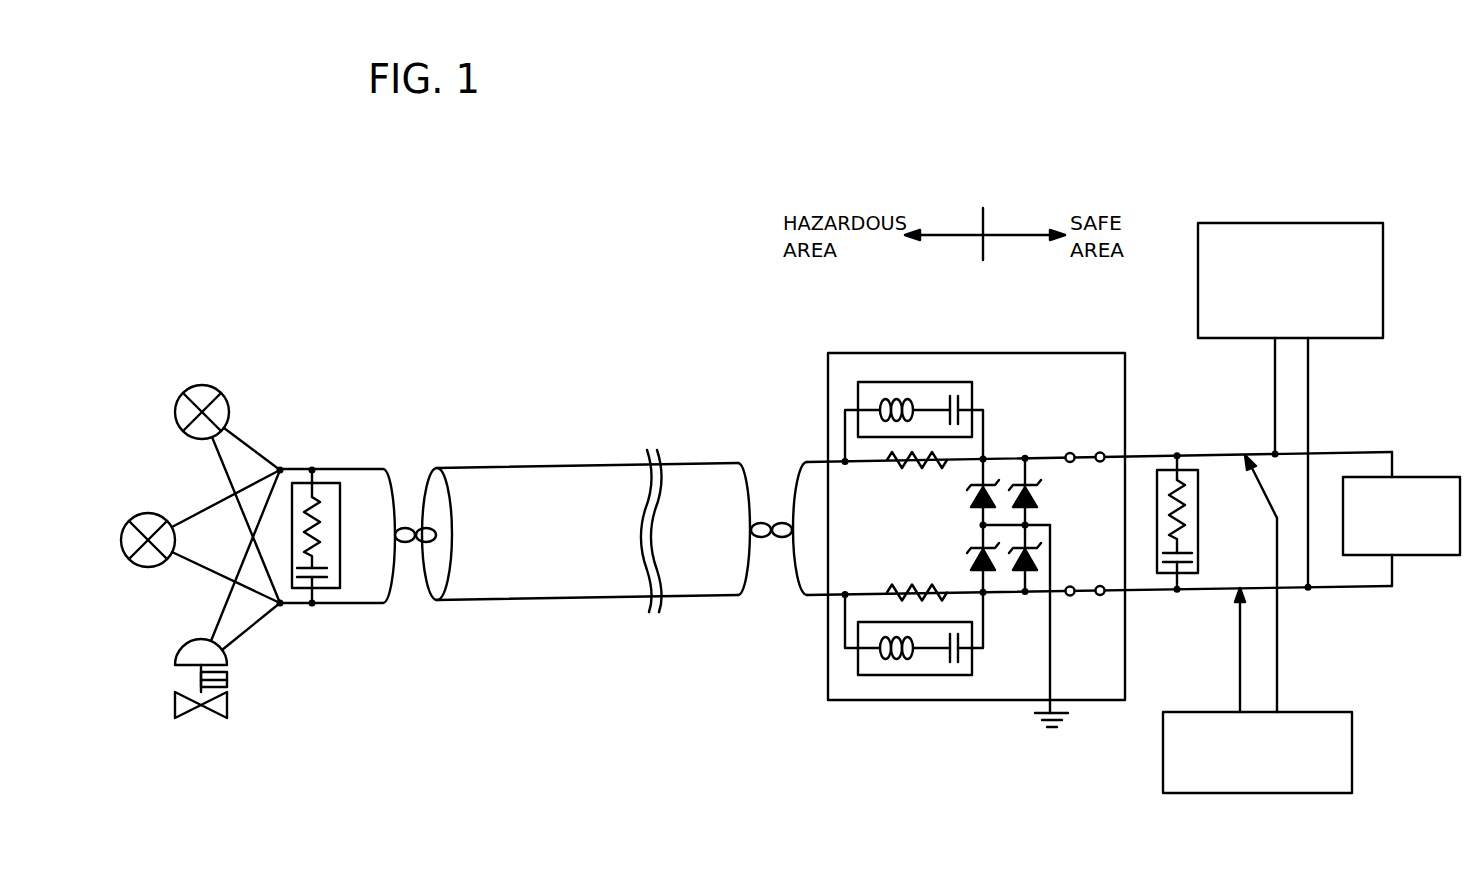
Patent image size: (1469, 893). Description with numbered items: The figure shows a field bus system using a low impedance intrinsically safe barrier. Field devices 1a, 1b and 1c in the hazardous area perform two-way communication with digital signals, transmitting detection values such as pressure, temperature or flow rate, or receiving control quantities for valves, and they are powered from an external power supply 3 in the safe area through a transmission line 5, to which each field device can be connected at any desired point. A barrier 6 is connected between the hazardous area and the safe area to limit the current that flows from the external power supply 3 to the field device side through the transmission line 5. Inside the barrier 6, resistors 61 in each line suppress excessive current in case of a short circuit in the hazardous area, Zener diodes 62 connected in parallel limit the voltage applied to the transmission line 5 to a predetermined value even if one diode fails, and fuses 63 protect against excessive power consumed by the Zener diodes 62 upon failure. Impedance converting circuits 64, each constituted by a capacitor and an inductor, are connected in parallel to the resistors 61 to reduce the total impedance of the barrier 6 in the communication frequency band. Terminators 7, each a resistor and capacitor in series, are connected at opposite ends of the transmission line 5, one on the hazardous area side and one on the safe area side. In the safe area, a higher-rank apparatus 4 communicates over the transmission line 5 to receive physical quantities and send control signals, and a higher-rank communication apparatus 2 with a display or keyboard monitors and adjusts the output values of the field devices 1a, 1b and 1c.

The field device 1a is at (203, 385).
The field device 1b is at (148, 513).
The field device 1c is at (226, 660).
The higher-rank communication apparatus 2 is at (1163, 756).
The external power supply 3 is at (1400, 557).
The higher-rank apparatus 4 is at (1383, 292).
The transmission line 5 is at (535, 466).
The barrier 6 is at (976, 562).
The terminator 7 is at (340, 533).
The resistor 61 is at (920, 473).
The Zener diode 62 is at (1038, 502).
The fuse 63 is at (1083, 450).
The impedance converting circuit 64 is at (972, 389).